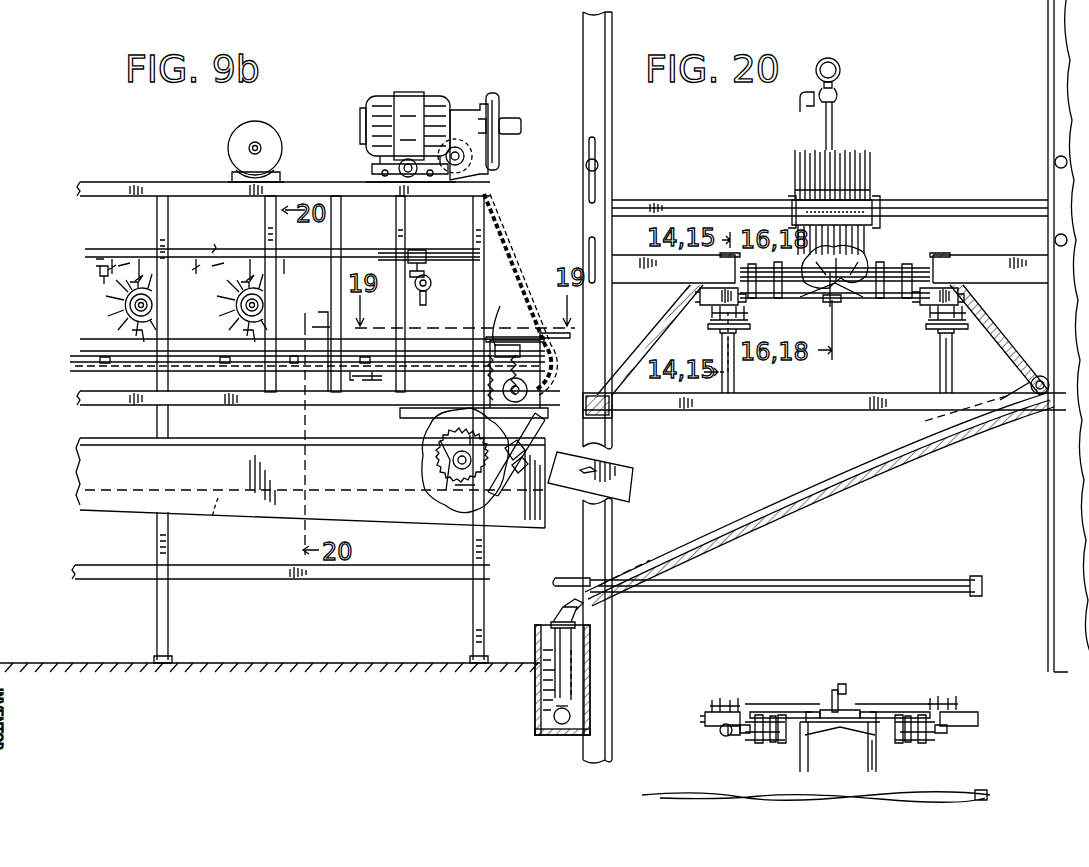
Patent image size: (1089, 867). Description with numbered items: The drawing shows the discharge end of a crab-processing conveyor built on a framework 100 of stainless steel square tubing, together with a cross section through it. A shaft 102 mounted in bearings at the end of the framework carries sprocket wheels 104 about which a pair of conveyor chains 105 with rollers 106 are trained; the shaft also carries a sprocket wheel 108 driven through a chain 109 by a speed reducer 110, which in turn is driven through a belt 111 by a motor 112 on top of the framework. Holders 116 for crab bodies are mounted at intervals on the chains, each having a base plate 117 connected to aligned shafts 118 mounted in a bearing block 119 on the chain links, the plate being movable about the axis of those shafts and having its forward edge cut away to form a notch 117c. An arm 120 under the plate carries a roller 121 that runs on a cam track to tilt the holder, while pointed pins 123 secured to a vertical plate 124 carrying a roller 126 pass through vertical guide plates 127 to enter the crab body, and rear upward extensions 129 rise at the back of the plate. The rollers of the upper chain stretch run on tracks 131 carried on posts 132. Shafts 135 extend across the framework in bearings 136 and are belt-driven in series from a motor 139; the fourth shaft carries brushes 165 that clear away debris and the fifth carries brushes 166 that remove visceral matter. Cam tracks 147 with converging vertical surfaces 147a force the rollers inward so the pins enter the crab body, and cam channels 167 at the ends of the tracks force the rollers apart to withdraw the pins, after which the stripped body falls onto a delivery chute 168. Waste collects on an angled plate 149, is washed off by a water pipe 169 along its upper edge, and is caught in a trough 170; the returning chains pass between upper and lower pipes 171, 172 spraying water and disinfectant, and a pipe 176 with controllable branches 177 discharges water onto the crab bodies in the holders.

In FIG. 9B, the framework 100 is at (163, 176).
In FIG. 9B, the shaft 102 is at (527, 388).
In FIG. 9B, the sprocket wheels 104 is at (548, 368).
In FIG. 9B, the conveyor chains 105 is at (232, 521).
In FIG. 20, the rollers 106 is at (750, 316).
In FIG. 9B, the sprocket wheel 108 is at (485, 386).
In FIG. 9B, the chain 109 is at (510, 258).
In FIG. 20, the chain 109 is at (740, 742).
In FIG. 9B, the speed reducer 110 is at (462, 110).
In FIG. 9B, the belt 111 is at (497, 163).
In FIG. 9B, the motor 112 is at (406, 94).
In FIG. 9B, the holders 116 is at (180, 380).
In FIG. 20, the holders 116 is at (900, 238).
In FIG. 20, the base plate 117 is at (877, 300).
In FIG. 20, the notch 117c is at (830, 310).
In FIG. 20, the shafts 118 is at (782, 700).
In FIG. 20, the bearing block 119 is at (962, 300).
In FIG. 20, the arm 120 is at (825, 690).
In FIG. 20, the roller 121 is at (834, 690).
In FIG. 20, the pins 123 is at (775, 742).
In FIG. 20, the vertical plate 124 is at (948, 734).
In FIG. 9B, the roller 126 is at (504, 310).
In FIG. 20, the roller 126 is at (730, 272).
In FIG. 20, the guide plates 127 is at (884, 248).
In FIG. 20, the rear upward extensions 129 is at (870, 770).
In FIG. 9B, the tracks 131 is at (370, 387).
In FIG. 20, the tracks 131 is at (710, 332).
In FIG. 20, the posts 132 is at (722, 372).
In FIG. 9B, the shafts 135 is at (148, 305).
In FIG. 9B, the bearings 136 is at (126, 314).
In FIG. 9B, the motor 139 is at (270, 118).
In FIG. 20, the cam tracks 147 is at (950, 252).
In FIG. 9B, the vertical surfaces 147a is at (315, 355).
In FIG. 20, the vertical surfaces 147a is at (730, 260).
In FIG. 9B, the plate 149 is at (255, 426).
In FIG. 20, the plate 149 is at (850, 472).
In FIG. 9B, the brushes 165 is at (140, 260).
In FIG. 9B, the brushes 166 is at (250, 262).
In FIG. 9B, the cam channels 167 is at (540, 330).
In FIG. 9B, the delivery chute 168 is at (628, 478).
In FIG. 20, the water pipe 169 is at (1036, 380).
In FIG. 9B, the trough 170 is at (378, 515).
In FIG. 20, the trough 170 is at (532, 710).
In FIG. 20, the upper water pipes 171 is at (876, 580).
In FIG. 20, the lower water pipe 172 is at (955, 782).
In FIG. 9B, the pipe 176 is at (217, 250).
In FIG. 20, the pipe 176 is at (842, 72).
In FIG. 9B, the controllable branches 177 is at (92, 273).
In FIG. 20, the controllable branches 177 is at (836, 118).